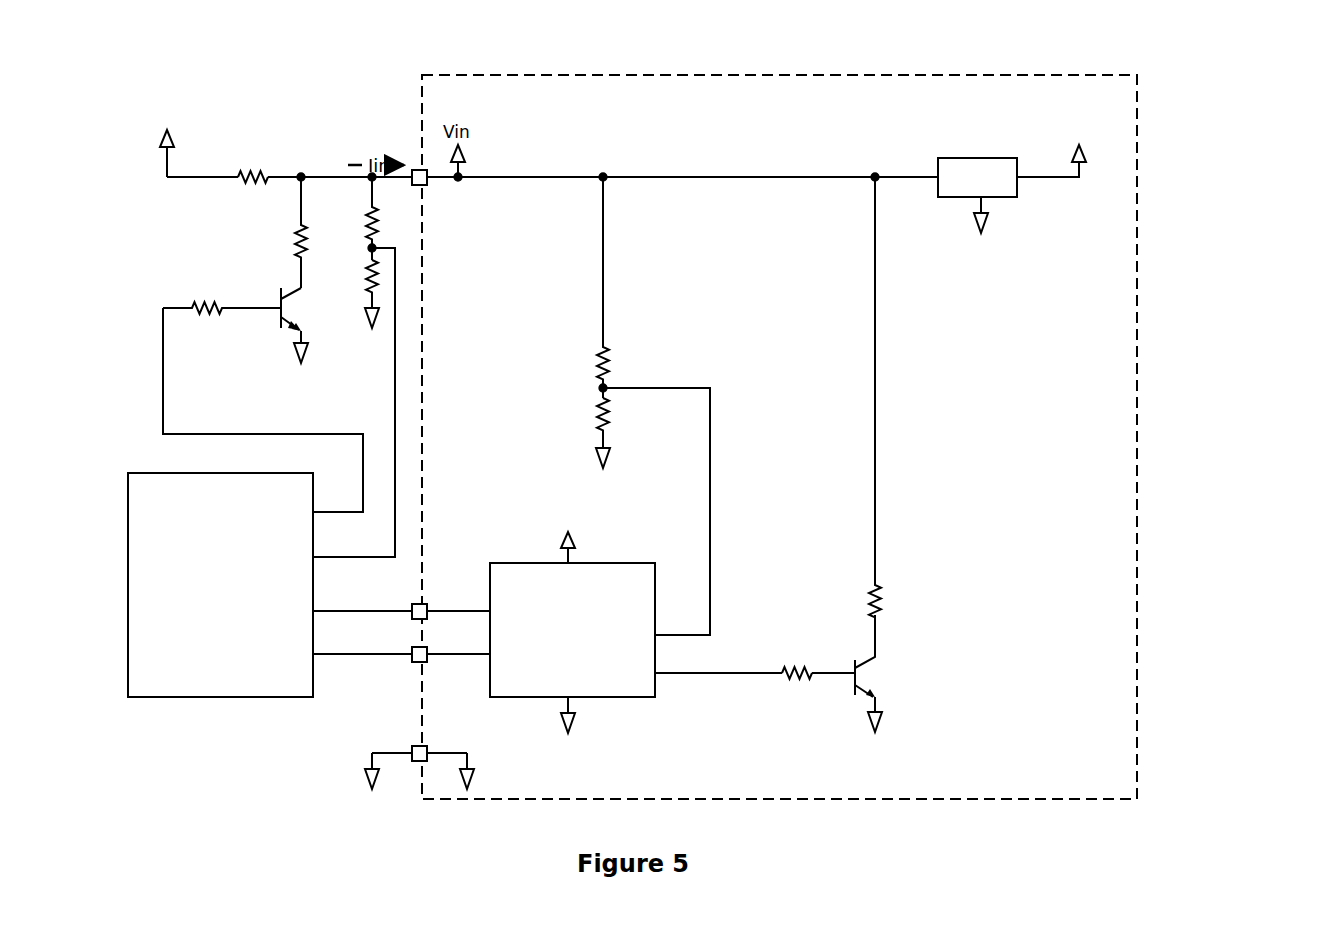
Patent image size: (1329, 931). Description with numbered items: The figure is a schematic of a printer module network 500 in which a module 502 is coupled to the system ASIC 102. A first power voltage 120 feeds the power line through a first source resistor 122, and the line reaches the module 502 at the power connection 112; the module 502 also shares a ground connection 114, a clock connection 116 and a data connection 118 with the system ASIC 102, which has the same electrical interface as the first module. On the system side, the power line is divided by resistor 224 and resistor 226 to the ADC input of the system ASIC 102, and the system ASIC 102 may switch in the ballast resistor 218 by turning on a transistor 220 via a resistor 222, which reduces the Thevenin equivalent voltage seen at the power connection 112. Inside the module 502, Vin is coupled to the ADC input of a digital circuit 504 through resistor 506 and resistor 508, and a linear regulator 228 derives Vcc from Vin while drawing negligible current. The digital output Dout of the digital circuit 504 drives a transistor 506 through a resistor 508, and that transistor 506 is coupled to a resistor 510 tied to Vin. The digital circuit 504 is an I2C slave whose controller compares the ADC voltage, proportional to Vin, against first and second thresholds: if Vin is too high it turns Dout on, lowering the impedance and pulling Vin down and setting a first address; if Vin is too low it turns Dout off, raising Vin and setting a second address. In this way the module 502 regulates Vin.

The printer module network 500 is at (1234, 90).
The module 502 is at (1137, 230).
The digital circuit 504 is at (593, 697).
The resistor / transistor 506 is at (597, 365).
The resistor 508 is at (597, 428).
The resistor 510 is at (870, 590).
The system ASIC 102 is at (183, 697).
The power connection 112 is at (414, 168).
The ground connection 114 is at (412, 748).
The clock connection 116 is at (427, 603).
The data connection 118 is at (427, 660).
The first power voltage 120 is at (167, 140).
The first source resistor 122 is at (250, 172).
The ballast resistor 218 is at (295, 240).
The transistor 220 is at (280, 322).
The resistor 222 is at (197, 302).
The resistor 224 is at (365, 207).
The resistor 226 is at (364, 283).
The linear regulator 228 is at (975, 158).